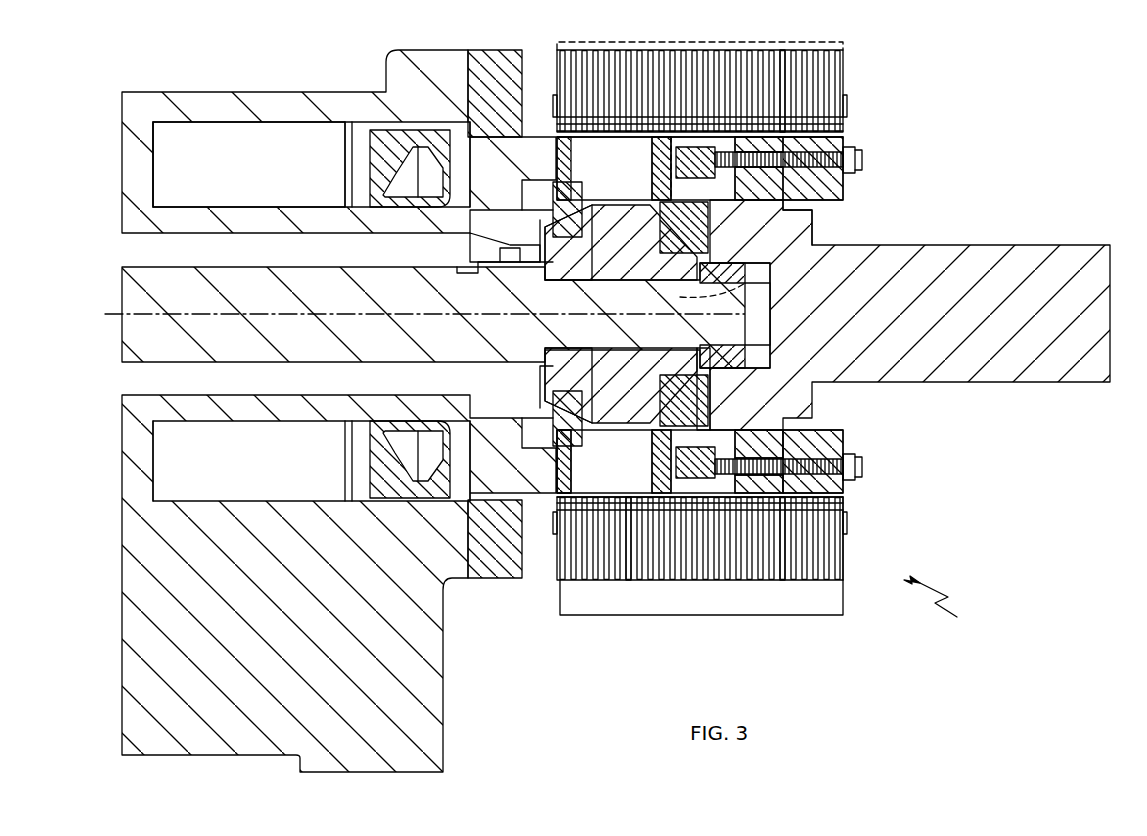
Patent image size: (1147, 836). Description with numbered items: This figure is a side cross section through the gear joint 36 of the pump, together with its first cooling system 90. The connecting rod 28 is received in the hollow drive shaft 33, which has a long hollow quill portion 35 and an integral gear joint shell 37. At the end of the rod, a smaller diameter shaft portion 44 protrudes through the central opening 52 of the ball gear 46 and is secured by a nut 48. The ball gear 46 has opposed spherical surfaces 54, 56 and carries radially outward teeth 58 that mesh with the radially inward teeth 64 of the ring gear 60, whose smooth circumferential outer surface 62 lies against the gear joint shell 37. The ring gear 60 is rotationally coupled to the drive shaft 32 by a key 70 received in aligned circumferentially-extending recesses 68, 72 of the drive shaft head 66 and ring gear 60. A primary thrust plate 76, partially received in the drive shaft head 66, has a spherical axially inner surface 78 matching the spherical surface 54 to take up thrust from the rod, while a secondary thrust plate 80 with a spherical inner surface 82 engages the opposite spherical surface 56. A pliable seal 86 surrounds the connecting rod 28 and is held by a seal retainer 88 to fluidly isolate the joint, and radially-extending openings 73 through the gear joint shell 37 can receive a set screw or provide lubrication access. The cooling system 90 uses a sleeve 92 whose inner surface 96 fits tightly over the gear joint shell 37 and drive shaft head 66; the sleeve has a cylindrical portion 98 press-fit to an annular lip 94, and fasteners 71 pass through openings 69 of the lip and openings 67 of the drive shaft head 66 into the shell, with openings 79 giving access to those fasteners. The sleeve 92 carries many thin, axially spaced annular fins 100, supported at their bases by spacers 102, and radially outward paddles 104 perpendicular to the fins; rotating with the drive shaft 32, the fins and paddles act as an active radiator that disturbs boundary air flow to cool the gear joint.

The connecting rod 28 is at (122, 298).
The drive shaft 32 is at (994, 248).
The hollow drive shaft 33 is at (202, 216).
The quill portion 35 is at (306, 216).
The gear joint 36 is at (748, 236).
The gear joint shell 37 is at (612, 150).
The shaft portion 44 is at (705, 318).
The ball gear 46 is at (690, 378).
The nut 48 is at (738, 352).
The central opening 52 is at (740, 268).
The spherical surface 54 is at (660, 402).
The spherical surface 56 is at (598, 405).
The teeth 58 is at (615, 440).
The ring gear 60 is at (560, 430).
The circumferential outer surface 62 is at (628, 530).
The teeth 64 is at (690, 412).
The drive shaft head 66 is at (712, 195).
The openings 67 is at (772, 165).
The circumferentially-extending recesses 68 is at (676, 165).
The openings 69 is at (838, 142).
The key 70 is at (640, 180).
The fasteners 71 is at (858, 160).
The circumferentially-extending recesses 72 is at (660, 186).
The radially-extending openings 73 is at (565, 462).
The primary thrust plate 76 is at (706, 240).
The axially inner surface 78 is at (650, 232).
The openings 79 is at (858, 463).
The secondary thrust plate 80 is at (550, 202).
The spherical inner surface 82 is at (570, 238).
The pliable seal 86 is at (498, 248).
The seal retainer 88 is at (490, 273).
The first cooling system 90 is at (945, 605).
The sleeve 92 is at (834, 560).
The annular lip 94 is at (822, 440).
The inner surface 96 is at (760, 490).
The cylindrical portion 98 is at (818, 492).
The fins 100 is at (560, 65).
The spacer 102 is at (782, 110).
The paddles 104 is at (722, 48).